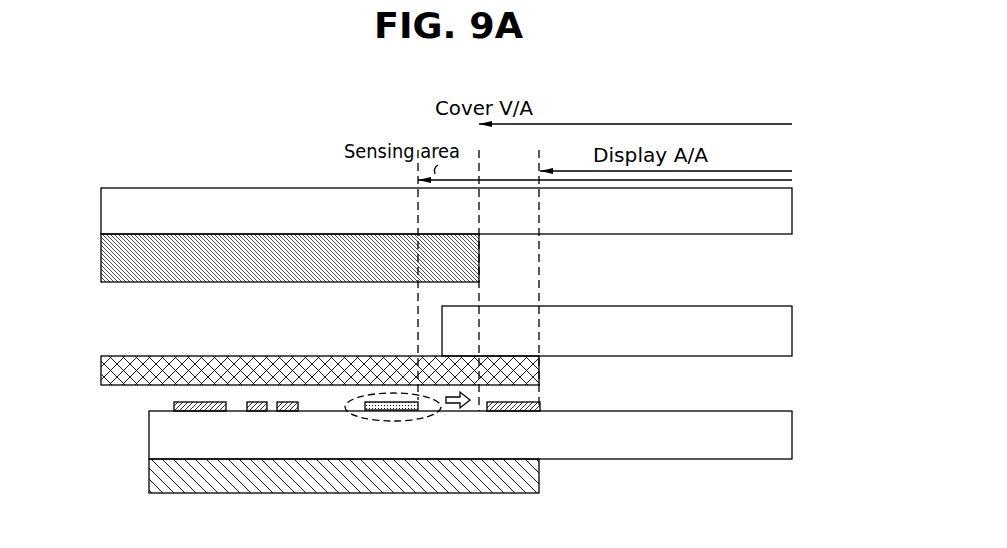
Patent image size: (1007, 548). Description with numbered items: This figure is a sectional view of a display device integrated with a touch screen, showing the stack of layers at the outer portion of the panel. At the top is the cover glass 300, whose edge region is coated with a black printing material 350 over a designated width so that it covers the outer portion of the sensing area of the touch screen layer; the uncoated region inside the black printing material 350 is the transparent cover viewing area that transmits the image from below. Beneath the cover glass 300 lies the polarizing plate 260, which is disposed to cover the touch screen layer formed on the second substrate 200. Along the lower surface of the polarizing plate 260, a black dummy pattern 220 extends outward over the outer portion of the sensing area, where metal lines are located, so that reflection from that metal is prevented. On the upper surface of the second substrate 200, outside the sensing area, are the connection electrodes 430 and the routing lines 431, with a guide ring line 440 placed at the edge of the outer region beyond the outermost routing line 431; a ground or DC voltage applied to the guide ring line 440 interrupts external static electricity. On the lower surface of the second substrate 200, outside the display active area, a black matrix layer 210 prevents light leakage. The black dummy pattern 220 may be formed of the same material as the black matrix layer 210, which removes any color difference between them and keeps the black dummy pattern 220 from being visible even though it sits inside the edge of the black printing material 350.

The cover glass 300 is at (782, 212).
The black printing material 350 is at (110, 258).
The polarizing plate 260 is at (782, 333).
The black dummy pattern 220 is at (110, 367).
The second substrate 200 is at (782, 437).
The black matrix layer 210 is at (160, 473).
The guide ring line 440 is at (165, 404).
The routing lines 431 is at (259, 422).
The connection electrodes 430 is at (552, 408).